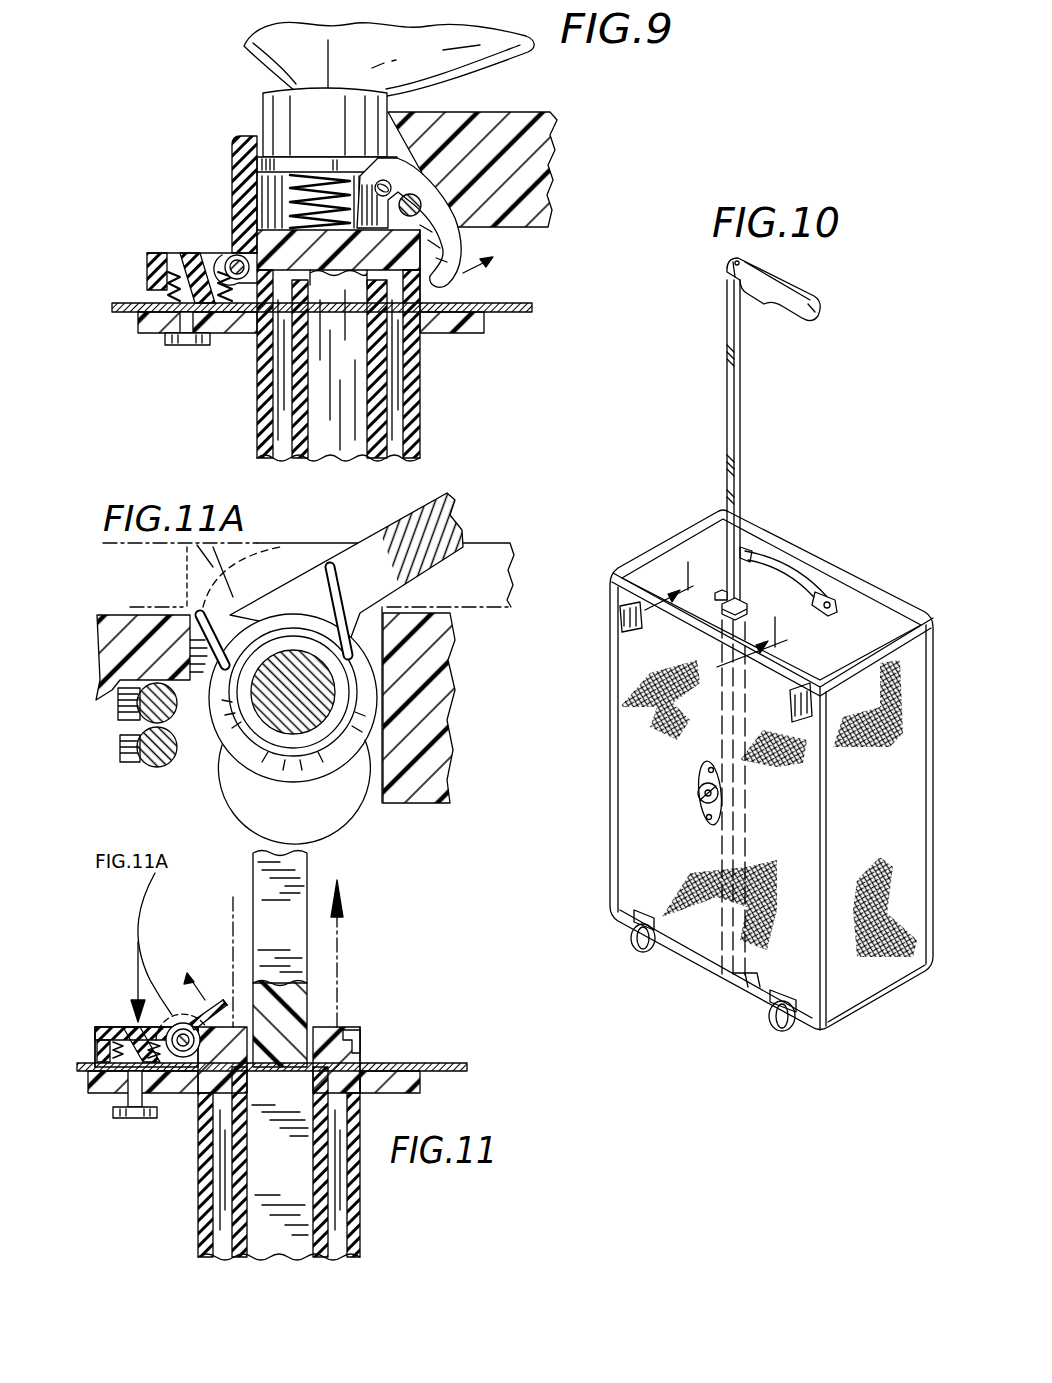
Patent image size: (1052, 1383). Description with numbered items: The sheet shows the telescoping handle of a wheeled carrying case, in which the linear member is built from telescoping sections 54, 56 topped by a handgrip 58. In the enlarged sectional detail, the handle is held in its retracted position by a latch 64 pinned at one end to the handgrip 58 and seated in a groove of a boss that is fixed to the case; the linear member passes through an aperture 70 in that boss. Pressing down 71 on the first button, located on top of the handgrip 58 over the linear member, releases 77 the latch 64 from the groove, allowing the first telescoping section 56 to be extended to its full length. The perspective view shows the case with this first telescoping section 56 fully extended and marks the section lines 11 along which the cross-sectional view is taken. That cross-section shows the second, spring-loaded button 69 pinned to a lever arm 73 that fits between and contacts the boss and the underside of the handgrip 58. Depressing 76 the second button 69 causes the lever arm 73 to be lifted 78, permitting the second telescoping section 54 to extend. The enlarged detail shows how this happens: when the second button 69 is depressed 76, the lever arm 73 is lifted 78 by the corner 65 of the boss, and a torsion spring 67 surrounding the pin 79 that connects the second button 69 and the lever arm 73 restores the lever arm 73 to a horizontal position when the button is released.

In FIG. 9, the pressing down 71 is at (277, 72).
In FIG. 9, the handgrip 58 is at (547, 112).
In FIG. 9, the latch 64 is at (462, 240).
In FIG. 9, the releasing 77 is at (463, 273).
In FIG. 9, the first telescoping section 56 is at (373, 395).
In FIG. 11A, the lever arm 73 is at (432, 498).
In FIG. 11, the lever arm 73 is at (185, 1002).
In FIG. 11A, the corner 65 is at (413, 647).
In FIG. 11A, the torsion spring 67 is at (412, 722).
In FIG. 11A, the pin 79 is at (307, 703).
In FIG. 11, the depressing 76 is at (135, 972).
In FIG. 11, the lifting 78 is at (192, 998).
In FIG. 11, the second button 69 is at (123, 1027).
In FIG. 11, the aperture 70 is at (342, 1027).
In FIG. 11, the second telescoping section 54 is at (330, 1178).
In FIG. 10, the section lines 11 is at (716, 627).